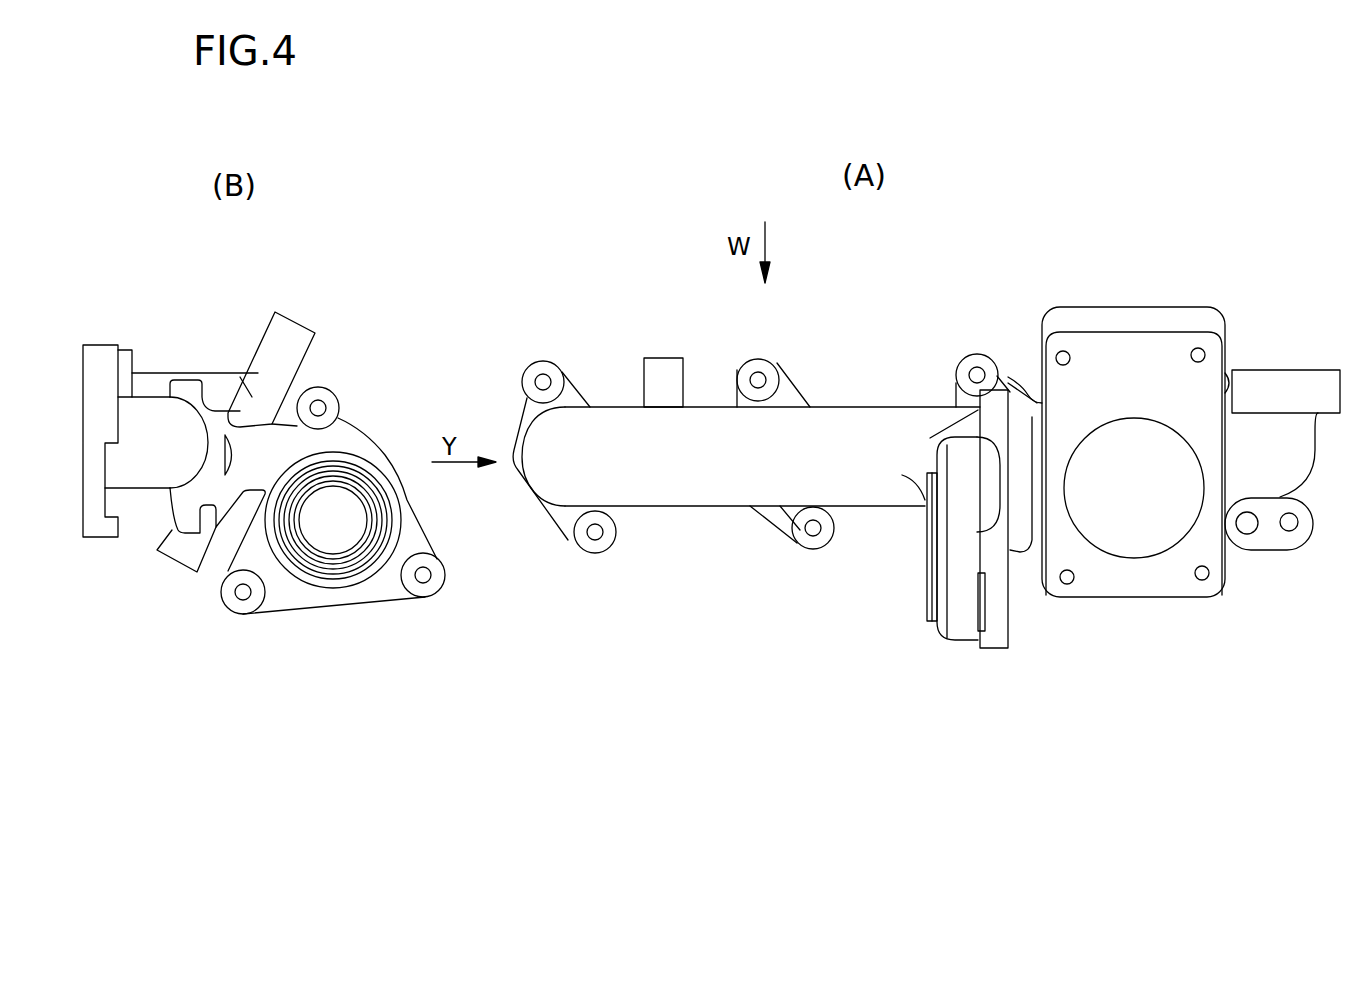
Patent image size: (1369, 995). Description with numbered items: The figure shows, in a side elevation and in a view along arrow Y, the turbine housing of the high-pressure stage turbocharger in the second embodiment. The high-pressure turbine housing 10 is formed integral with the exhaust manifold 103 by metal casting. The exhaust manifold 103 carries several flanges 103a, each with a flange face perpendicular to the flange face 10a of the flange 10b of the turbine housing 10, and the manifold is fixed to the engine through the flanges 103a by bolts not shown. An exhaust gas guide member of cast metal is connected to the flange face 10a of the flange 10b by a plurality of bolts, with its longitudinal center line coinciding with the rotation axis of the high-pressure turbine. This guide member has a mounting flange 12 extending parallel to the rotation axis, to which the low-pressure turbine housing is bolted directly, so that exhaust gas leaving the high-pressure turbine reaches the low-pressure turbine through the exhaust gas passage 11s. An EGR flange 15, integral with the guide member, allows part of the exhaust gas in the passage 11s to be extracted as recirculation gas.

In FIG. 4B, the high-pressure turbine housing 10 is at (387, 582).
In FIG. 4A, the high-pressure turbine housing 10 is at (965, 598).
In FIG. 4B, the flange face 10a is at (443, 557).
In FIG. 4A, the flange face 10a is at (1008, 607).
In FIG. 4A, the flange 10b is at (1008, 385).
In FIG. 4A, the exhaust gas passage 11s is at (1155, 540).
In FIG. 4B, the mounting flange 12 is at (297, 350).
In FIG. 4A, the mounting flange 12 is at (1133, 577).
In FIG. 4A, the EGR flange 15 is at (1275, 388).
In FIG. 4A, the exhaust manifold 103 is at (740, 482).
In FIG. 4B, the flange 103a is at (103, 350).
In FIG. 4A, the flange 103a is at (548, 367).